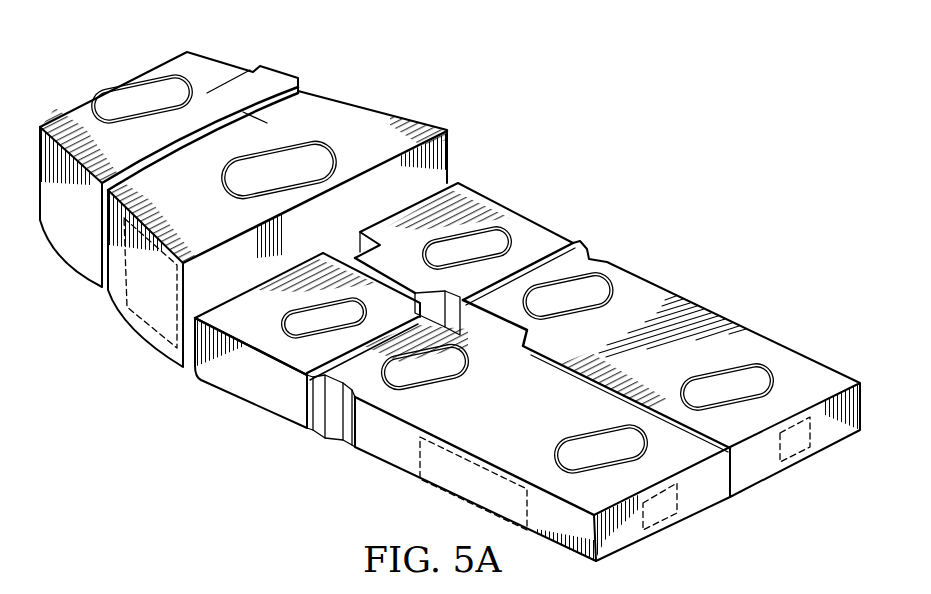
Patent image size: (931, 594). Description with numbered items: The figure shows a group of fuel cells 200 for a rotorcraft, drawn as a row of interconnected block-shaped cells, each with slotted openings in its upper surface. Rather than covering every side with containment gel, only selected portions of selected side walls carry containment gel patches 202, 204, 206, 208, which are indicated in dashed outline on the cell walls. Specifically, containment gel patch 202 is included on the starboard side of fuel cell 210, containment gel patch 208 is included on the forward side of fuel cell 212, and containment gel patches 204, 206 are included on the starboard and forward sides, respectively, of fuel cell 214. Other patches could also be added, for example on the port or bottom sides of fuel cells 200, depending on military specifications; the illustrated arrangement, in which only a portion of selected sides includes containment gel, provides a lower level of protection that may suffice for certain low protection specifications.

The fuel cells 200 is at (465, 307).
The containment gel patch 202 is at (153, 305).
The containment gel patch 204 is at (460, 483).
The containment gel patch 206 is at (677, 500).
The containment gel patch 208 is at (810, 437).
The fuel cell 210 is at (296, 229).
The fuel cell 212 is at (705, 379).
The fuel cell 214 is at (531, 451).